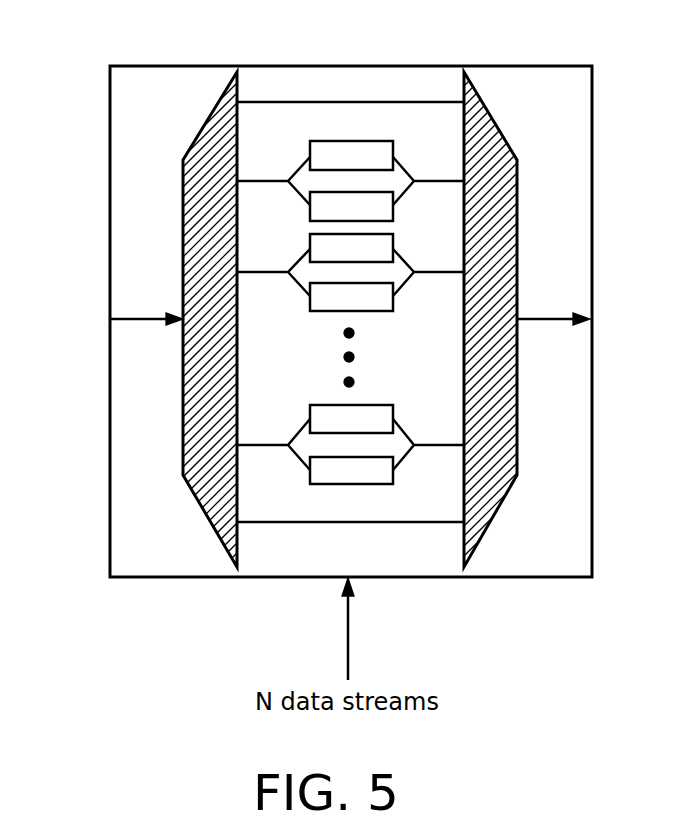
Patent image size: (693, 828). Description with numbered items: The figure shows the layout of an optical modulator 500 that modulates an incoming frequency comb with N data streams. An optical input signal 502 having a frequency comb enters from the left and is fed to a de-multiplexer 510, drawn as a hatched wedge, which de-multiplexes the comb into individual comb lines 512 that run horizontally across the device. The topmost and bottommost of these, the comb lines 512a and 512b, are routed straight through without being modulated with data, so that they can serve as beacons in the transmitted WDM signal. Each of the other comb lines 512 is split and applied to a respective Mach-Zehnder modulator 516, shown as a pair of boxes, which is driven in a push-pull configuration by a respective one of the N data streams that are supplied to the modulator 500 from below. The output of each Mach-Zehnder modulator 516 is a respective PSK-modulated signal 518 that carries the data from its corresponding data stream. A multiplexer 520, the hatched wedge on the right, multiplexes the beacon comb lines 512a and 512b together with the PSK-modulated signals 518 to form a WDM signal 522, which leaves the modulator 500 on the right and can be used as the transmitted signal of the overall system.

The optical modulator 500 is at (473, 66).
The optical input signal 502 is at (152, 320).
The de-multiplexer 510 is at (213, 525).
The comb lines 512 is at (270, 183).
The comb line 512a is at (269, 103).
The comb line 512b is at (350, 523).
The Mach-Zehnder modulator 516 is at (430, 140).
The PSK-modulated signal 518 is at (439, 183).
The multiplexer 520 is at (500, 124).
The WDM signal 522 is at (549, 320).